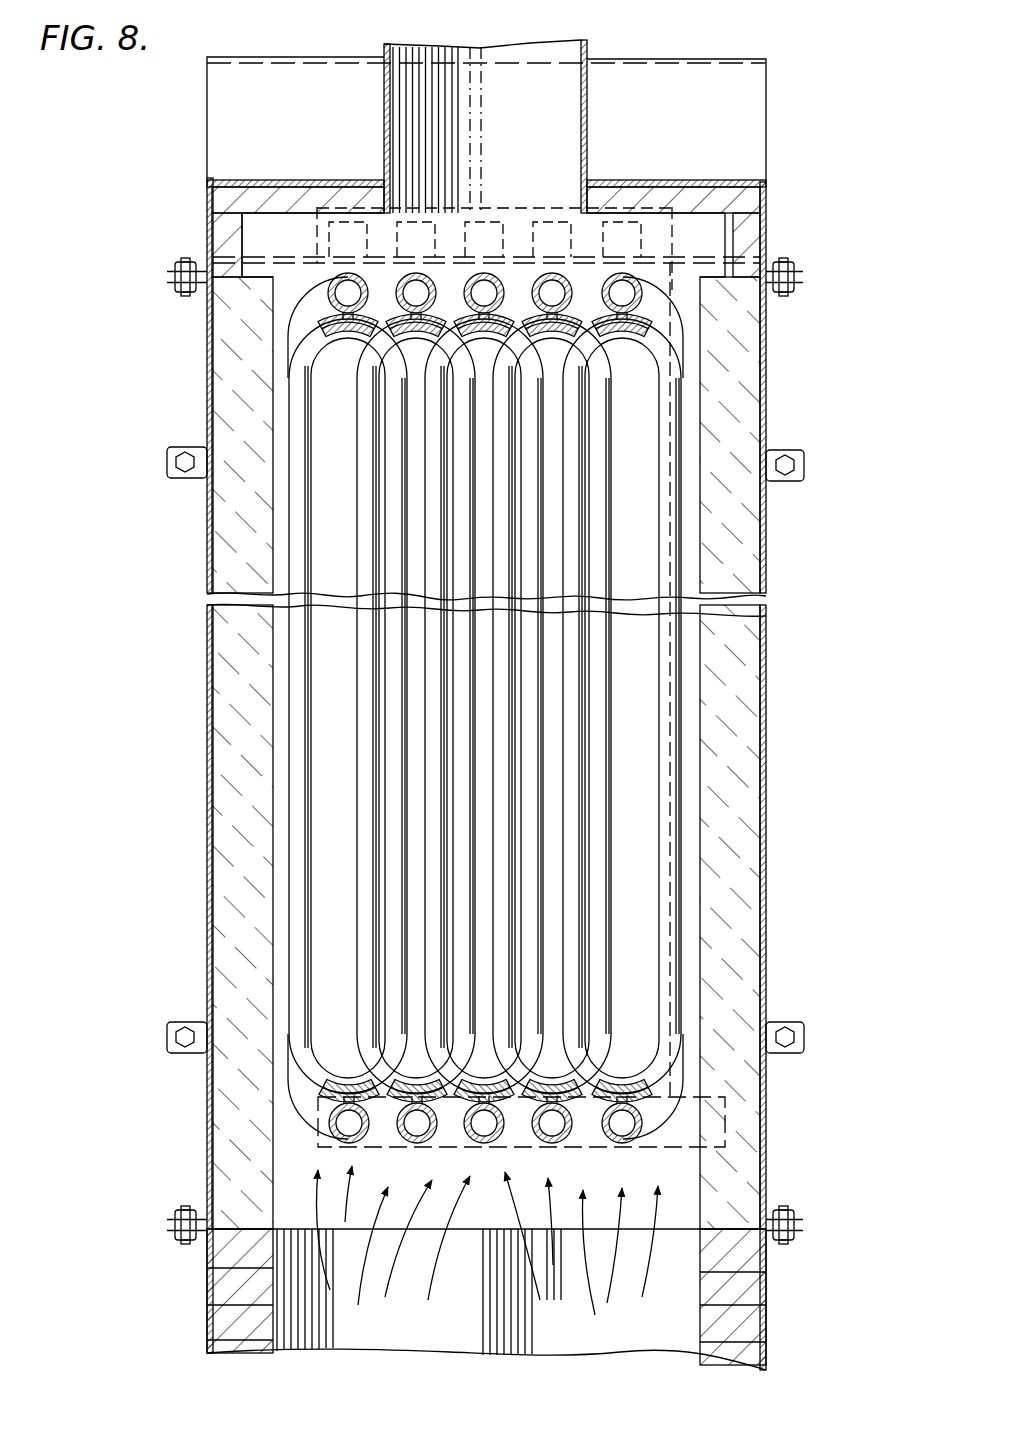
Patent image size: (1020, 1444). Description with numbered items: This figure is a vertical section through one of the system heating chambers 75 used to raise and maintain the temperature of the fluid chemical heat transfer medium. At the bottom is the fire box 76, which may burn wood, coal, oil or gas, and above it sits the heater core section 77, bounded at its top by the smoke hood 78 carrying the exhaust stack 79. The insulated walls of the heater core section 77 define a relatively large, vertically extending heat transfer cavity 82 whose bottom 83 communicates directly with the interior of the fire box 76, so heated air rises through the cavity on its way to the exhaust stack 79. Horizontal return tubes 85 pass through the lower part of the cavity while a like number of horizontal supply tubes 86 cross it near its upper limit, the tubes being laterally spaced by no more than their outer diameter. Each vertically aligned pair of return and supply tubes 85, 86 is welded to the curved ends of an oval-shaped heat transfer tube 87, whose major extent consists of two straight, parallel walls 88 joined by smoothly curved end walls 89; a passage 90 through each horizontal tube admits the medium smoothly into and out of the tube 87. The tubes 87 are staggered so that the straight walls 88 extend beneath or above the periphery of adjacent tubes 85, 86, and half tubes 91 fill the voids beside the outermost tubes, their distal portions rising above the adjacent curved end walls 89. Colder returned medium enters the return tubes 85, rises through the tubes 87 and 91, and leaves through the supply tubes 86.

The heating chamber 75 is at (772, 668).
The fire box 76 is at (683, 1286).
The heater core section 77 is at (243, 648).
The smoke hood 78 is at (727, 131).
The exhaust stack 79 is at (520, 77).
The heat transfer cavity 82 is at (327, 707).
The bottom of the cavity 83 is at (436, 1183).
The return tubes 85 is at (612, 1142).
The supply tubes 86 is at (637, 278).
The heat transfer tubes 87 is at (570, 540).
The straight parallel walls 88 is at (582, 766).
The curved end walls 89 is at (650, 337).
The passage 90 is at (352, 322).
The half tubes 91 is at (668, 443).